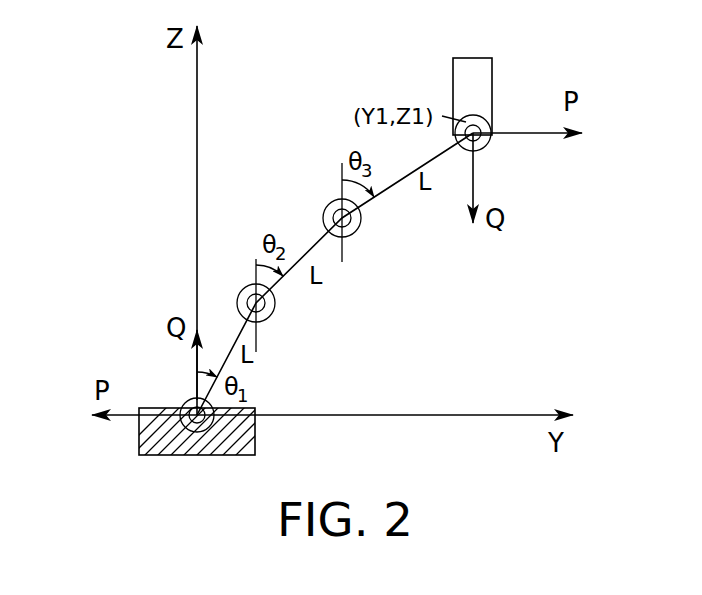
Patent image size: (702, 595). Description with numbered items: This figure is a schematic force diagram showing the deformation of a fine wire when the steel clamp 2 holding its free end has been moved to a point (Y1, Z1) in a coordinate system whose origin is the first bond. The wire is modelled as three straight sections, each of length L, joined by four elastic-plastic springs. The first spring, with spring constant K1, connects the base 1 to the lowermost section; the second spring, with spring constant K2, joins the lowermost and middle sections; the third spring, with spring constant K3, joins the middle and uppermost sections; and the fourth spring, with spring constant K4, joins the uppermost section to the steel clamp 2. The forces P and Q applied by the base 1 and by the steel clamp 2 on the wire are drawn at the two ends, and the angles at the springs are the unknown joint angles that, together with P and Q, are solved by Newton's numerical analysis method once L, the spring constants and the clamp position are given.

The base 1 is at (139, 442).
The steel clamp 2 is at (493, 78).
The spring constant of first elastic-plastic spring K1 is at (182, 401).
The spring constant of second elastic-plastic spring K2 is at (274, 307).
The spring constant of third elastic-plastic spring K3 is at (359, 222).
The spring constant of fourth elastic-plastic spring K4 is at (489, 139).